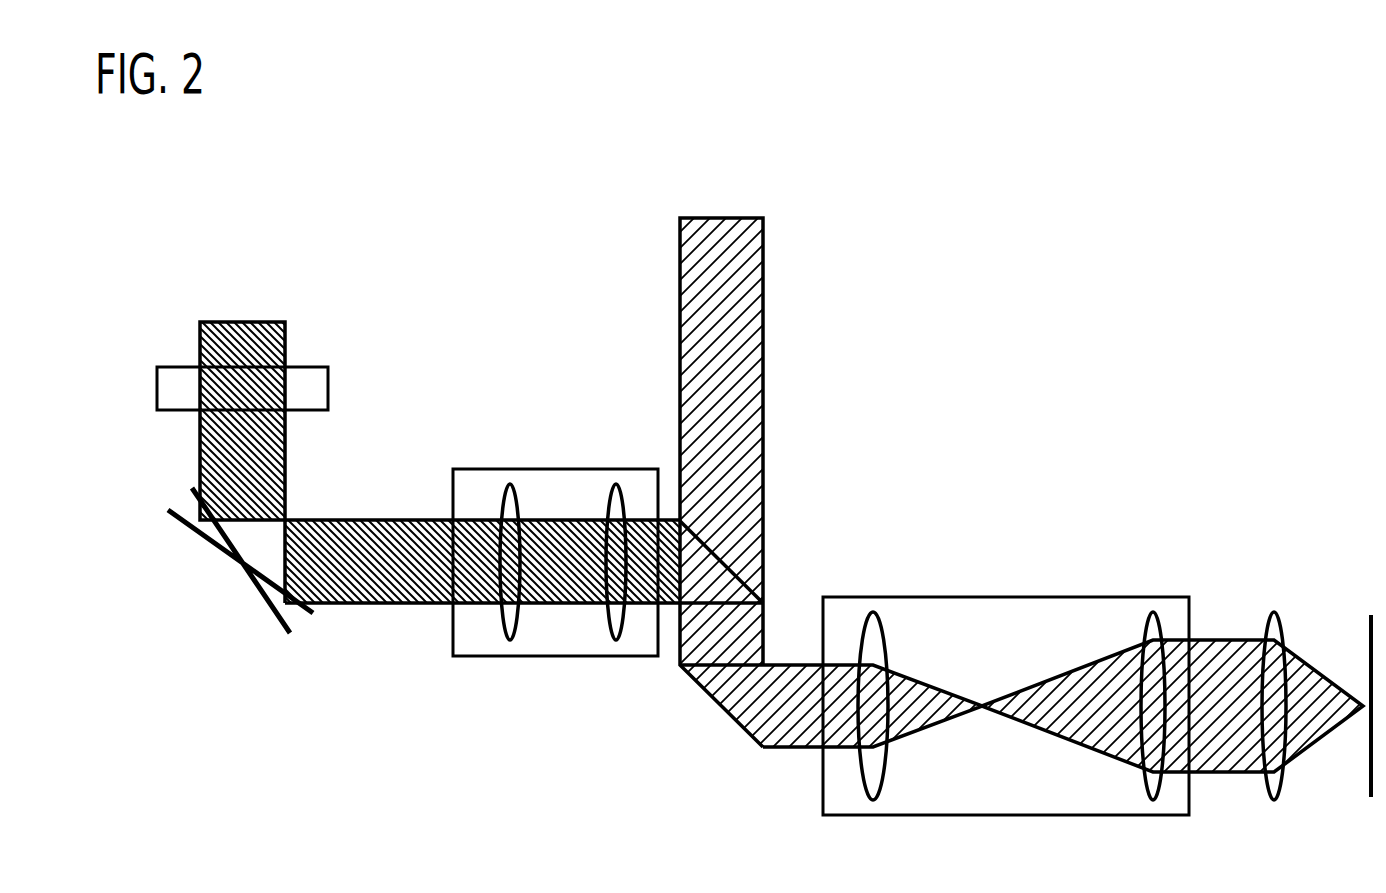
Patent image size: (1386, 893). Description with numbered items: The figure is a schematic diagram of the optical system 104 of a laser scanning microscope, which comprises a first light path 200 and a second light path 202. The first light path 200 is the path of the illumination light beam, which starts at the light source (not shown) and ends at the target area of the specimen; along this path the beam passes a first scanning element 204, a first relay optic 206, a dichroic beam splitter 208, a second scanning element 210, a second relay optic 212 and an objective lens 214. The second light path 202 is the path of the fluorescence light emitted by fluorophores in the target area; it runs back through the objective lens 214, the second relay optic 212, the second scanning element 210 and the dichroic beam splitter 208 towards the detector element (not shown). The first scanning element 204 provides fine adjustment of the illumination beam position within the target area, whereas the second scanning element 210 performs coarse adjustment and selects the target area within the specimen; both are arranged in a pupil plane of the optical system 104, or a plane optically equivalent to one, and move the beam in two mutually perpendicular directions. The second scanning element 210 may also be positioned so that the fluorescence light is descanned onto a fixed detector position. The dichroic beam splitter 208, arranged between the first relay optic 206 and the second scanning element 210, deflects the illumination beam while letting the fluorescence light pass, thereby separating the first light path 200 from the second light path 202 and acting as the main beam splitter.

The optical system 104 is at (186, 210).
The first light path 200 is at (246, 325).
The second light path 202 is at (718, 230).
The first scanning element 204 is at (230, 573).
The first relay optic 206 is at (565, 527).
The dichroic beam splitter 208 is at (720, 556).
The second scanning element 210 is at (713, 703).
The second relay optic 212 is at (1024, 690).
The objective lens 214 is at (1274, 802).